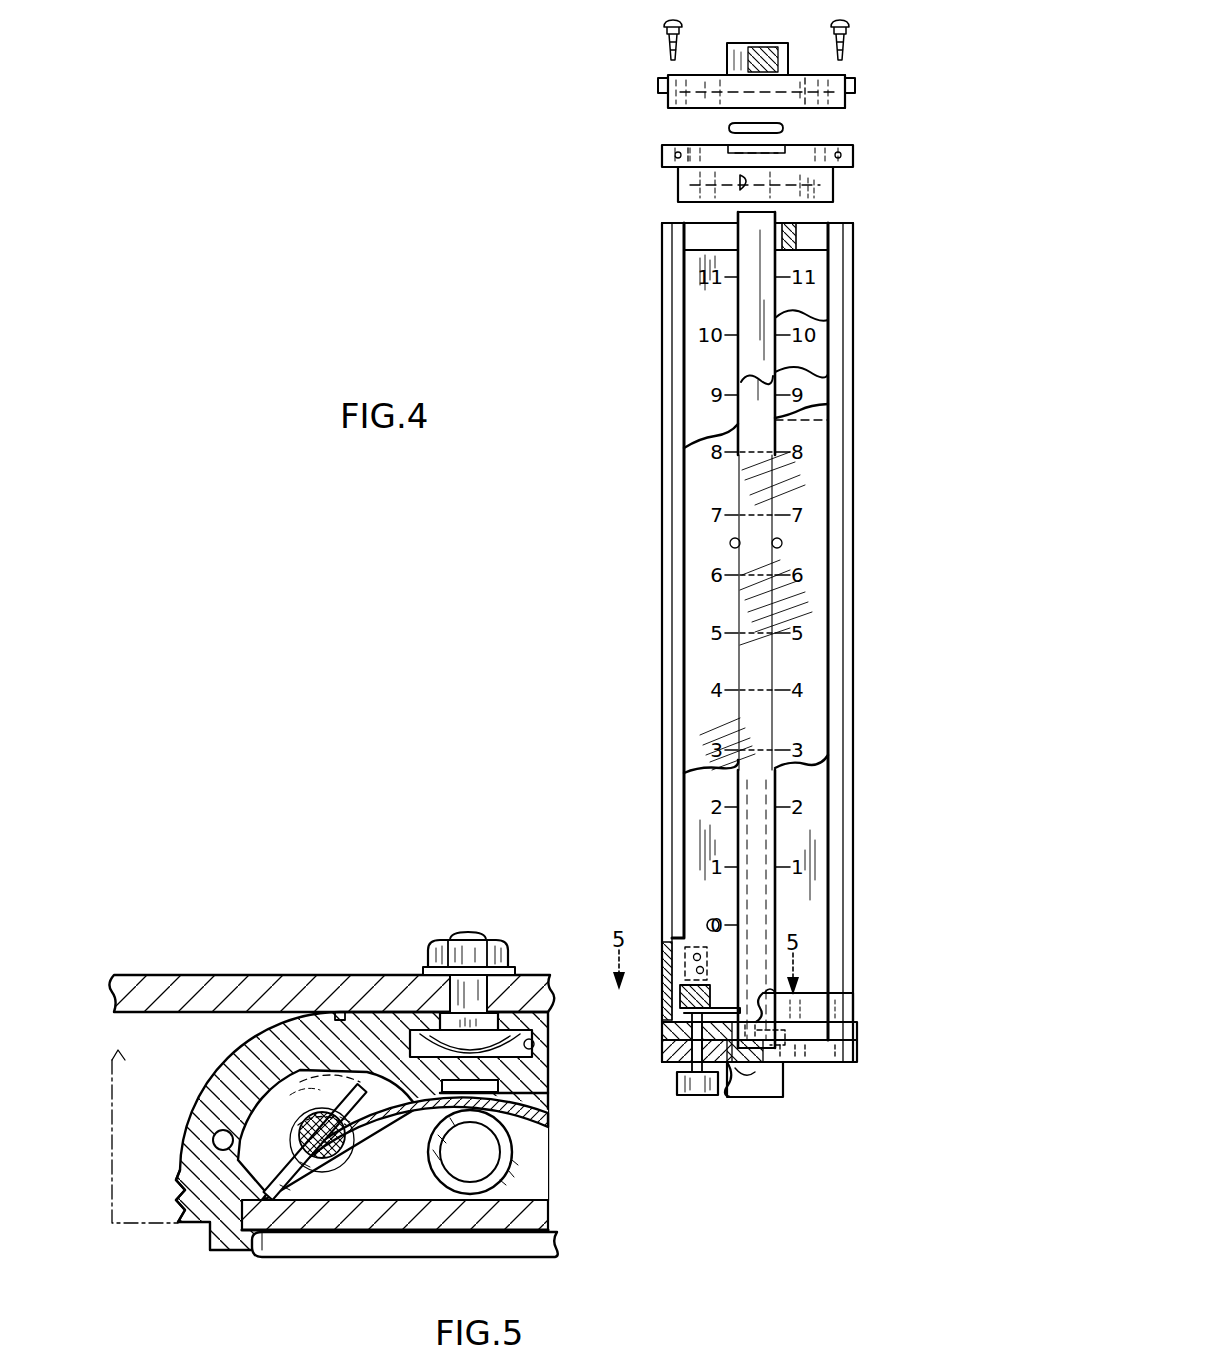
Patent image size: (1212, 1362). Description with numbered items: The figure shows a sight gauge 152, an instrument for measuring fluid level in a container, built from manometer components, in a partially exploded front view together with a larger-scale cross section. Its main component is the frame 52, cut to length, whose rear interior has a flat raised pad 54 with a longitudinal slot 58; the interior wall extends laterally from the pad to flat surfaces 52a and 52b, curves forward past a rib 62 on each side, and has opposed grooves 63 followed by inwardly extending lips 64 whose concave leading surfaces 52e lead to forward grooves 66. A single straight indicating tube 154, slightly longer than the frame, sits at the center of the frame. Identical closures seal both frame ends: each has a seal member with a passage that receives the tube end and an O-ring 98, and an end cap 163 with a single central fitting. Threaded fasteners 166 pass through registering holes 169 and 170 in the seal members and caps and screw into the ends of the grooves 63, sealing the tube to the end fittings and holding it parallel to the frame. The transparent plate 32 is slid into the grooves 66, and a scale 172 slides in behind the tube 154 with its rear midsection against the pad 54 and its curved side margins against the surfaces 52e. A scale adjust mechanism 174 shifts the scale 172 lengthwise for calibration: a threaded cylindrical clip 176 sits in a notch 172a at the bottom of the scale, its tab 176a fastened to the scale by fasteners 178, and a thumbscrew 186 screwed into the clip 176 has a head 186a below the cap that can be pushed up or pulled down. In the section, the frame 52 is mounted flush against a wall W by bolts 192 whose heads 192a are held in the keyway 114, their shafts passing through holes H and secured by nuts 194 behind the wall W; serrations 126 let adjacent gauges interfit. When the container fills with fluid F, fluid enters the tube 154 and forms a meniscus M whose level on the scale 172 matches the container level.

In FIG. 4, the transparent plate 32 is at (822, 445).
In FIG. 5, the transparent plate 32 is at (288, 1232).
In FIG. 4, the frame 52 is at (661, 268).
In FIG. 5, the frame 52 is at (550, 1022).
In FIG. 4, the flat surface 52a is at (700, 236).
In FIG. 4, the flat surface 52b is at (820, 240).
In FIG. 5, the leading surface of lip 52e is at (312, 1258).
In FIG. 5, the pad 54 is at (470, 1152).
In FIG. 4, the second longitudinal slot 58 is at (798, 230).
In FIG. 5, the rib 62 is at (252, 1102).
In FIG. 5, the groove 63 is at (205, 1140).
In FIG. 5, the lip 64 is at (178, 1185).
In FIG. 5, the groove 66 is at (255, 1252).
In FIG. 4, the O-ring 98 is at (783, 126).
In FIG. 5, the keyway 114 is at (535, 1044).
In FIG. 5, the serrations 126 is at (180, 1224).
In FIG. 4, the sight gauge 152 is at (628, 323).
In FIG. 5, the sight gauge 152 is at (195, 1098).
In FIG. 4, the indicating tube 154 is at (765, 318).
In FIG. 5, the indicating tube 154 is at (512, 1158).
In FIG. 5, the end cap 163 is at (520, 1252).
In FIG. 5, the threaded fastener 166 is at (212, 1140).
In FIG. 4, the hole 169 is at (670, 148).
In FIG. 4, the hole 170 is at (678, 78).
In FIG. 4, the scale 172 is at (815, 300).
In FIG. 5, the scale 172 is at (548, 1125).
In FIG. 4, the notch 172a is at (690, 1011).
In FIG. 4, the scale adjust mechanism 174 is at (658, 1067).
In FIG. 5, the scale adjust mechanism 174 is at (384, 1156).
In FIG. 4, the clip 176 is at (680, 997).
In FIG. 5, the clip 176 is at (348, 1160).
In FIG. 4, the tab 176a is at (655, 938).
In FIG. 5, the tab 176a is at (302, 1125).
In FIG. 4, the threaded fastener 178 is at (726, 910).
In FIG. 5, the threaded fastener 178 is at (352, 1143).
In FIG. 4, the thumbscrew 186 is at (700, 1097).
In FIG. 5, the thumbscrew 186 is at (340, 1095).
In FIG. 4, the screw head 186a is at (690, 1097).
In FIG. 5, the screw head 186a is at (350, 1232).
In FIG. 5, the bolt 192 is at (494, 945).
In FIG. 5, the bolt head 192a is at (540, 1068).
In FIG. 5, the nut 194 is at (512, 965).
In FIG. 4, the meniscus M is at (776, 378).
In FIG. 4, the fluid F is at (830, 418).
In FIG. 5, the hole H is at (470, 990).
In FIG. 5, the wall W is at (178, 985).